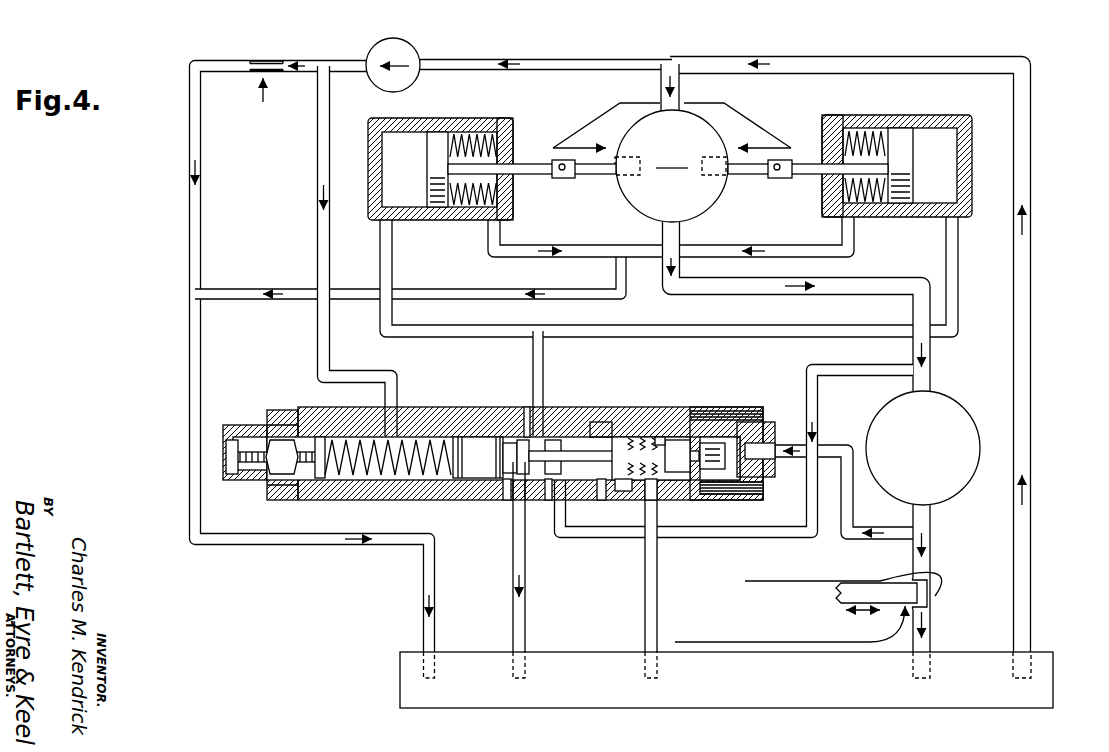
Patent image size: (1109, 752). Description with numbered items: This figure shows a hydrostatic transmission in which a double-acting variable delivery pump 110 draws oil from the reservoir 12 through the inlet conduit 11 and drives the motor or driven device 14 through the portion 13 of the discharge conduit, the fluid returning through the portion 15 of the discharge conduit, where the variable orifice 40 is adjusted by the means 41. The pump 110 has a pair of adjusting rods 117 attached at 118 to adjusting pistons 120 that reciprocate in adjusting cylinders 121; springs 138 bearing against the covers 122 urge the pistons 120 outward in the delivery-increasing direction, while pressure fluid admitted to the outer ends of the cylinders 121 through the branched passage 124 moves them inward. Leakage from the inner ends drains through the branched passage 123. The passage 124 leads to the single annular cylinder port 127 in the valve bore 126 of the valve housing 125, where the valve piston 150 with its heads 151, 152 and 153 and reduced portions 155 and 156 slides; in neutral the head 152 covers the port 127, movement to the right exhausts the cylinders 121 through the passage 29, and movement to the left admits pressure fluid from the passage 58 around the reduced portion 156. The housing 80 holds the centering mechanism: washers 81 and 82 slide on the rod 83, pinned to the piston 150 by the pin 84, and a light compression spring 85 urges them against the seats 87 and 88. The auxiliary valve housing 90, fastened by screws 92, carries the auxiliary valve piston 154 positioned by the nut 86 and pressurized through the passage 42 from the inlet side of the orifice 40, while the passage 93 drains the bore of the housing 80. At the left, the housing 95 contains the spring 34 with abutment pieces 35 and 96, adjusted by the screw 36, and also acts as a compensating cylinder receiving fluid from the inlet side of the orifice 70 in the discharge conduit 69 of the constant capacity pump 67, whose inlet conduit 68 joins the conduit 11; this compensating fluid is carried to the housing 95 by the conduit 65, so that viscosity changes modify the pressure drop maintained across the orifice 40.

The inlet conduit 11 is at (822, 57).
The reservoir 12 is at (1053, 661).
The portion of the discharge conduit 13 is at (934, 347).
The driven device 14 is at (962, 411).
The portion of the discharge conduit 15 is at (932, 521).
The passage 29 is at (527, 622).
The spring 34 is at (418, 410).
The abutment piece 35 is at (320, 436).
The screw 36 is at (259, 464).
The variable orifice 40 is at (931, 597).
The means for varying orifice 41 is at (834, 597).
The passage 42 is at (855, 529).
The passage 58 is at (818, 392).
The conduit 65 is at (317, 228).
The constant capacity pump 67 is at (413, 51).
The inlet conduit 68 is at (601, 59).
The discharge conduit 69 is at (307, 60).
The orifice 70 is at (266, 61).
The housing 80 is at (623, 408).
The washer 81 is at (652, 447).
The washer 82 is at (674, 414).
The rod 83 is at (664, 407).
The pin 84 is at (600, 494).
The compression spring 85 is at (660, 494).
The nut 86 is at (745, 447).
The seat 87 is at (621, 492).
The seat 88 is at (688, 500).
The auxiliary valve housing 90 is at (751, 409).
The screws 92 is at (764, 492).
The passage 93 is at (658, 590).
The housing 95 is at (441, 501).
The abutment piece 96 is at (451, 437).
The variable delivery pump 110 is at (717, 201).
The adjusting rods 117 is at (594, 176).
The attachment 118 is at (561, 172).
The adjusting pistons 120 is at (436, 144).
The adjusting cylinders 121 is at (370, 121).
The covers 122 is at (516, 131).
The branched passage 123 is at (616, 272).
The branched passage 124 is at (436, 327).
The valve housing 125 is at (528, 407).
The valve bore 126 is at (561, 539).
The cylinder port 127 is at (549, 408).
The springs 138 is at (453, 133).
The valve piston 150 is at (503, 407).
The head 151 is at (477, 407).
The head 152 is at (517, 508).
The head 153 is at (596, 410).
The auxiliary valve piston 154 is at (712, 409).
The reduced portion 155 is at (506, 494).
The reduced portion 156 is at (548, 502).